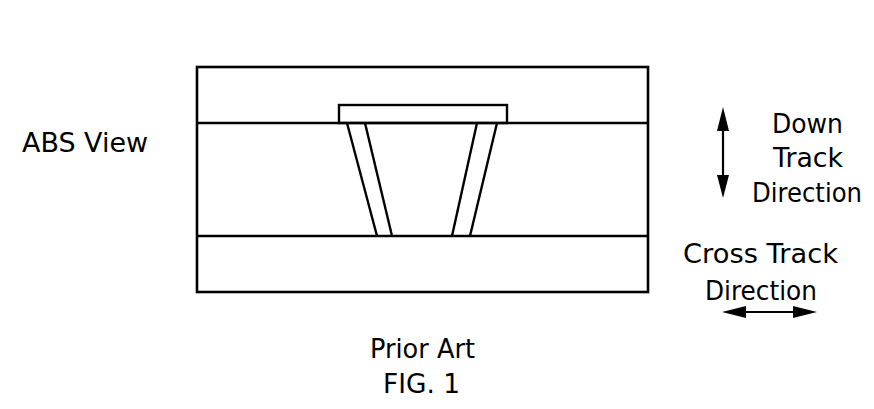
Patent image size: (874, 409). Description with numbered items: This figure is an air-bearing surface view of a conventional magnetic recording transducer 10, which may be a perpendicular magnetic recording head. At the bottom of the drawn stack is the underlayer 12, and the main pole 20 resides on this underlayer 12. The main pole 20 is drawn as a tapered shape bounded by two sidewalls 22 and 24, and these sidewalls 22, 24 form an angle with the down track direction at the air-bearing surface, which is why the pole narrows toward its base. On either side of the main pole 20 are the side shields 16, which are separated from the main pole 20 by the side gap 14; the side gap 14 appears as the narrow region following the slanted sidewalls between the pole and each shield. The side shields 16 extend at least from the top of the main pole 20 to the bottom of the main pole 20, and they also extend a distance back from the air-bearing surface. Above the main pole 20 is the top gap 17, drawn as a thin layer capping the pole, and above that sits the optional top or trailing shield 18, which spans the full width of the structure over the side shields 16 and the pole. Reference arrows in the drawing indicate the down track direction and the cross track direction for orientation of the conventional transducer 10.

The magnetic recording transducer 10 is at (65, 62).
The underlayer 12 is at (422, 257).
The side gap 14 is at (347, 143).
The side shields 16 is at (421, 178).
The top gap 17 is at (367, 105).
The trailing shield 18 is at (648, 99).
The main pole 20 is at (423, 233).
The sidewall 22 is at (363, 210).
The sidewall 24 is at (488, 206).